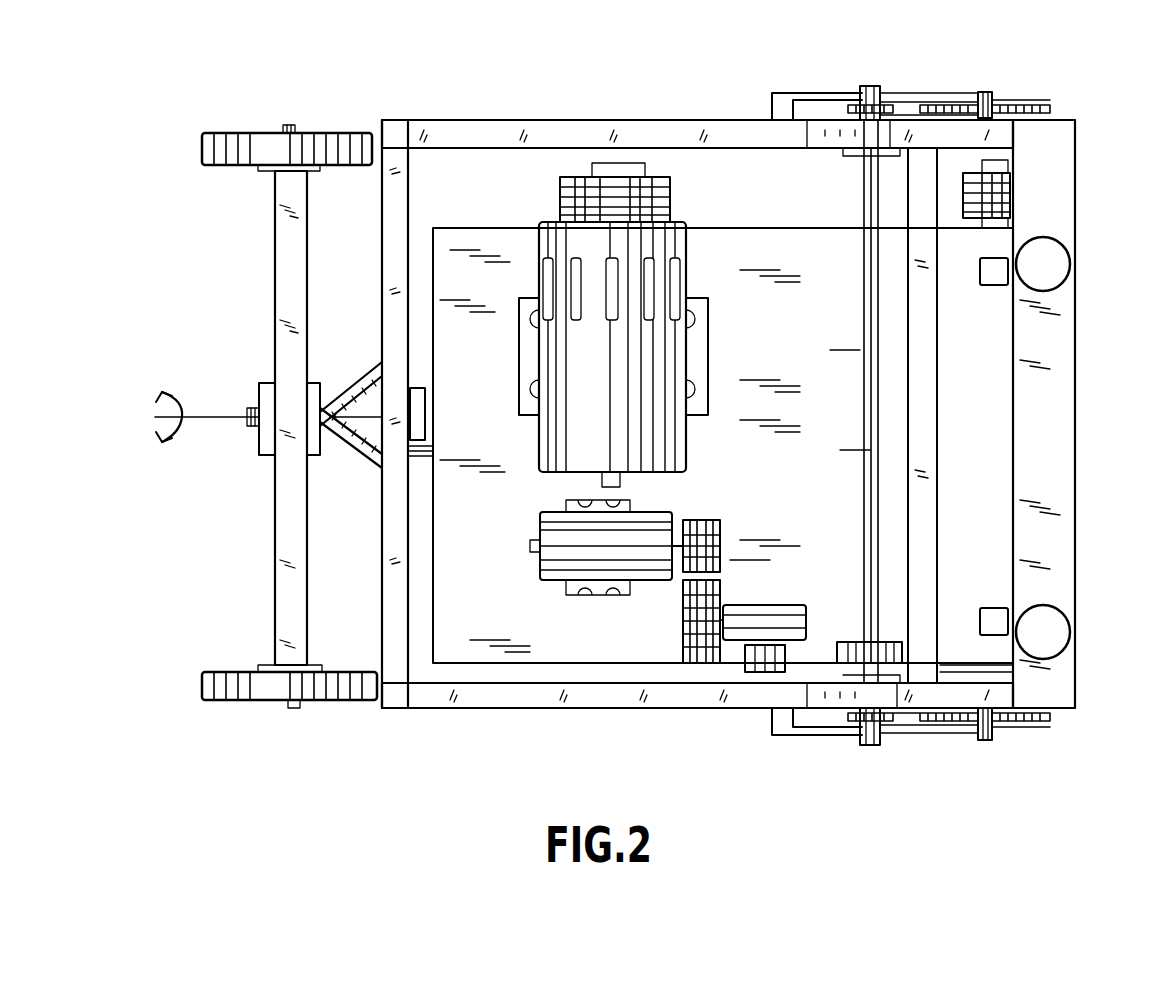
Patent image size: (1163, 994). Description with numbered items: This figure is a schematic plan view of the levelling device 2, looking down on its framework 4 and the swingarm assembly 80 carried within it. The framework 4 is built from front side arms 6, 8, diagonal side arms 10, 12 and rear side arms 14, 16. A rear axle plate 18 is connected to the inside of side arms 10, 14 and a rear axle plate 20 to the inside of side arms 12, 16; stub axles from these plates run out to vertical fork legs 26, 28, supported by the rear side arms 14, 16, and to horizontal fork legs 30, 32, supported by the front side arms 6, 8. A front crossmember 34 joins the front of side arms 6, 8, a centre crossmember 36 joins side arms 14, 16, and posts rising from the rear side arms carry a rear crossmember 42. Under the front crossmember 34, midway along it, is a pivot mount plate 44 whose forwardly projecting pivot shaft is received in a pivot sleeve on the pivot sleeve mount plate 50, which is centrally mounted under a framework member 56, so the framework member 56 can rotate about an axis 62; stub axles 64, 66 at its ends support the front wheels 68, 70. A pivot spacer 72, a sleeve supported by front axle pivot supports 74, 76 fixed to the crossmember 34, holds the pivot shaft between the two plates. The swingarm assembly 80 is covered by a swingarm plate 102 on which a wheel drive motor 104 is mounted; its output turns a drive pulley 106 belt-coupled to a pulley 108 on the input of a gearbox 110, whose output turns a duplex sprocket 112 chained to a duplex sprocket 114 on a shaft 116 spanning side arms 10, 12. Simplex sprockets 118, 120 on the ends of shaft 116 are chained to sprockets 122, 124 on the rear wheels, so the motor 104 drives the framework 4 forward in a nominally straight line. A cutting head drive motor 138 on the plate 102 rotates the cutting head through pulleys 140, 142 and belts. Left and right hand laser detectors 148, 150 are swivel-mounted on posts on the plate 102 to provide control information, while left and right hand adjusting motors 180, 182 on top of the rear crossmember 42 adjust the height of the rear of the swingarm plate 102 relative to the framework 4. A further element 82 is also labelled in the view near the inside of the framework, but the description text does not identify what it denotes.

The levelling device 2 is at (650, 62).
The framework 4 is at (576, 78).
The front side arm 6 is at (440, 708).
The front side arm 8 is at (465, 120).
The diagonal side arm 10 is at (825, 697).
The diagonal side arm 12 is at (815, 147).
The rear side arm 14 is at (1073, 706).
The rear side arm 16 is at (1078, 123).
The rear axle plate 18 is at (972, 690).
The rear axle plate 20 is at (844, 158).
The vertical fork leg 26 is at (984, 730).
The vertical fork leg 28 is at (990, 93).
The horizontal fork leg 30 is at (790, 732).
The horizontal fork leg 32 is at (809, 93).
The front crossmember 34 is at (382, 280).
The centre crossmember 36 is at (937, 482).
The rear crossmember 42 is at (1075, 477).
The pivot mount plate 44 is at (422, 390).
The pivot sleeve mount plate 50 is at (261, 383).
The framework member 56 is at (275, 253).
The axis 62 is at (245, 417).
The stub axle 64 is at (292, 702).
The stub axle 66 is at (298, 128).
The front wheel 68 is at (225, 672).
The front wheel 70 is at (230, 137).
The pivot spacer 72 is at (355, 450).
The front axle pivot support 74 is at (380, 460).
The front axle pivot support 76 is at (358, 380).
The swingarm assembly 80 is at (467, 200).
The fastener 82 is at (425, 452).
The swingarm plate 102 is at (764, 227).
The wheel drive motor 104 is at (540, 565).
The drive pulley 106 is at (713, 520).
The pulley 108 is at (683, 622).
The gearbox 110 is at (770, 603).
The duplex sprocket 112 is at (748, 672).
The duplex sprocket 114 is at (853, 642).
The shaft 116 is at (863, 374).
The simplex sprocket 118 is at (882, 733).
The simplex sprocket 120 is at (882, 89).
The sprocket 122 is at (1048, 723).
The sprocket 124 is at (1050, 105).
The cutting head drive motor 138 is at (690, 292).
The pulley 140 is at (650, 172).
The pulley 142 is at (1013, 168).
The left hand laser detector 148 is at (995, 605).
The right hand laser detector 150 is at (991, 285).
The left hand adjusting motor 180 is at (1068, 628).
The right hand adjusting motor 182 is at (1070, 263).